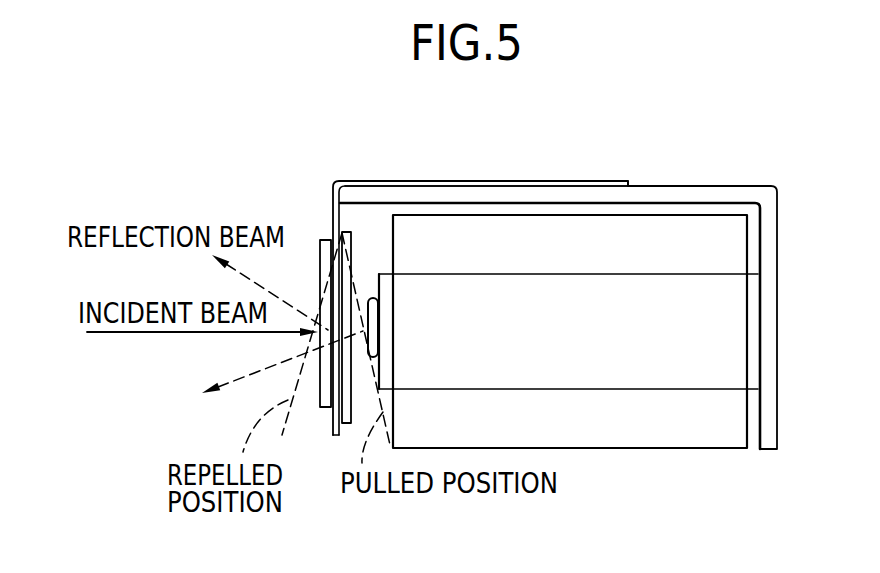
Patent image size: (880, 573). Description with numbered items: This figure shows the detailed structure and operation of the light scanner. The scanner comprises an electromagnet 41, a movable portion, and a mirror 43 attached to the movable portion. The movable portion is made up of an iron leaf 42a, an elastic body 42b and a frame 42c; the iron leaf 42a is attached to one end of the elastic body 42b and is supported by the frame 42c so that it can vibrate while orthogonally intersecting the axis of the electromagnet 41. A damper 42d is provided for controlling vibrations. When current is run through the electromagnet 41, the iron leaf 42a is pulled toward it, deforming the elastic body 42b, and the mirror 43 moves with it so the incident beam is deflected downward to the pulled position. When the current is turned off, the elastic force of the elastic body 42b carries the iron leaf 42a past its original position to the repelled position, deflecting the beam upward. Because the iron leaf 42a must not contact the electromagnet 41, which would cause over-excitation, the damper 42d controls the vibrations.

The electromagnet 41 is at (700, 430).
The iron leaf 42a is at (350, 243).
The elastic body 42b is at (590, 181).
The frame 42c is at (705, 193).
The damper 42d is at (375, 315).
The mirror 43 is at (321, 240).